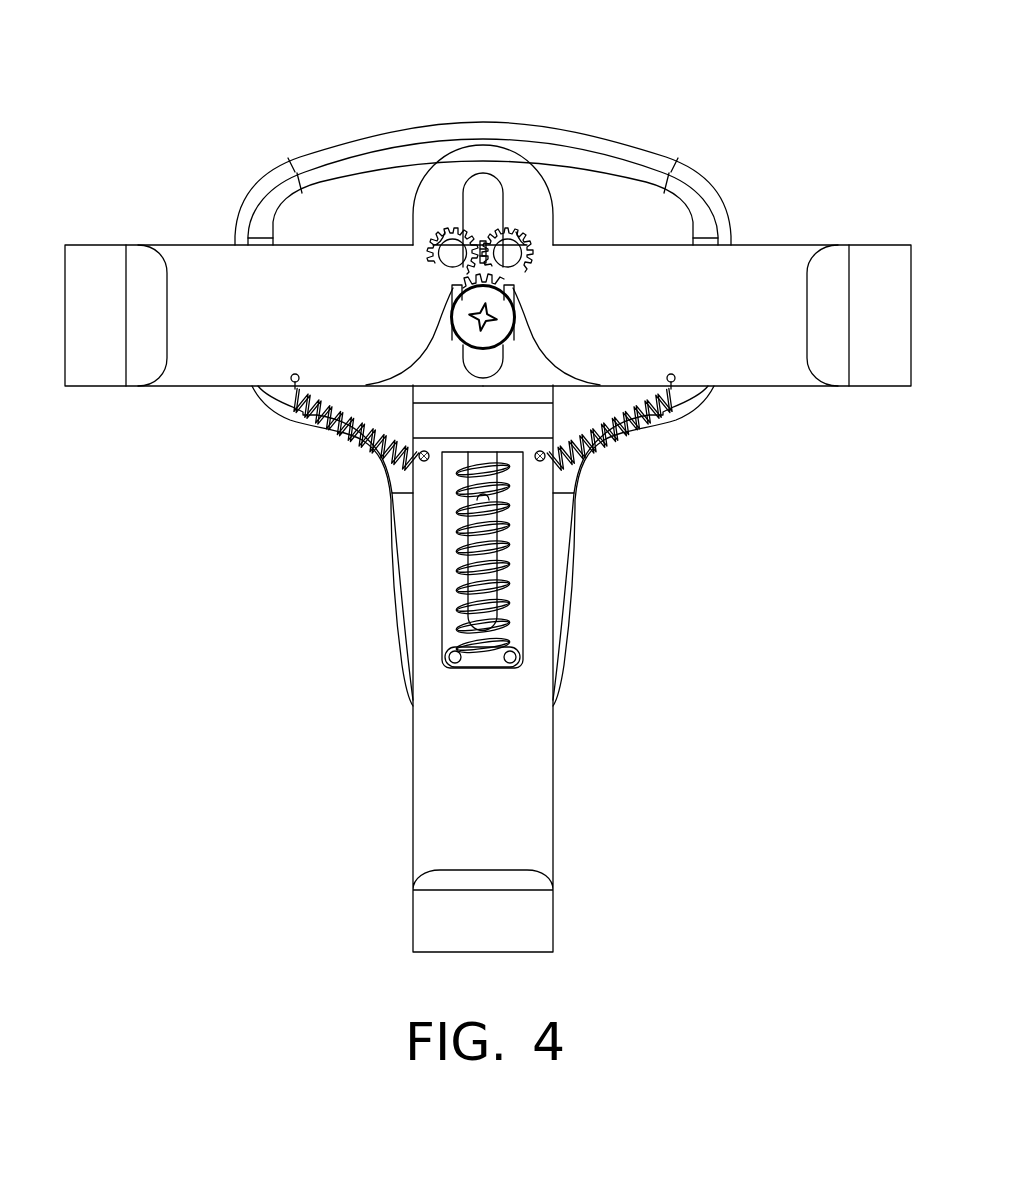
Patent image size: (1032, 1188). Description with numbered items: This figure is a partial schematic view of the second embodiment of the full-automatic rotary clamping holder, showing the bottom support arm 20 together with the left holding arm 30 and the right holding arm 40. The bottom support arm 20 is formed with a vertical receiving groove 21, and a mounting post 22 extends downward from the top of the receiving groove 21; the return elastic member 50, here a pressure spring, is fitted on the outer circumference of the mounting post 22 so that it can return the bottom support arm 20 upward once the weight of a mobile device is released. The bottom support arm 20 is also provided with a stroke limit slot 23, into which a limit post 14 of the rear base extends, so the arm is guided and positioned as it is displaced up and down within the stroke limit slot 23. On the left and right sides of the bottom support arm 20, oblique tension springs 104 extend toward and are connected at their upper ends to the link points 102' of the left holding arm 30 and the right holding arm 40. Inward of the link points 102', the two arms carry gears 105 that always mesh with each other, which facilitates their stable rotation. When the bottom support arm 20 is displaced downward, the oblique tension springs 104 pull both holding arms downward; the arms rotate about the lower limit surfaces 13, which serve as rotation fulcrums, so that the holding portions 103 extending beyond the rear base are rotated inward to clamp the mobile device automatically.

The limit post 14 is at (493, 312).
The stroke limit slot 23 is at (488, 215).
The gears 105 is at (510, 248).
The holding portions 103 is at (847, 357).
The left holding arm 30 is at (208, 383).
The right holding arm 40 is at (772, 385).
The lower limit surfaces 13 is at (707, 392).
The oblique tension springs 104 is at (607, 430).
The link points 102' is at (480, 452).
The bottom support arm 20 is at (513, 753).
The return elastic member 50 is at (507, 600).
The receiving groove 21 is at (515, 565).
The mounting post 22 is at (477, 515).